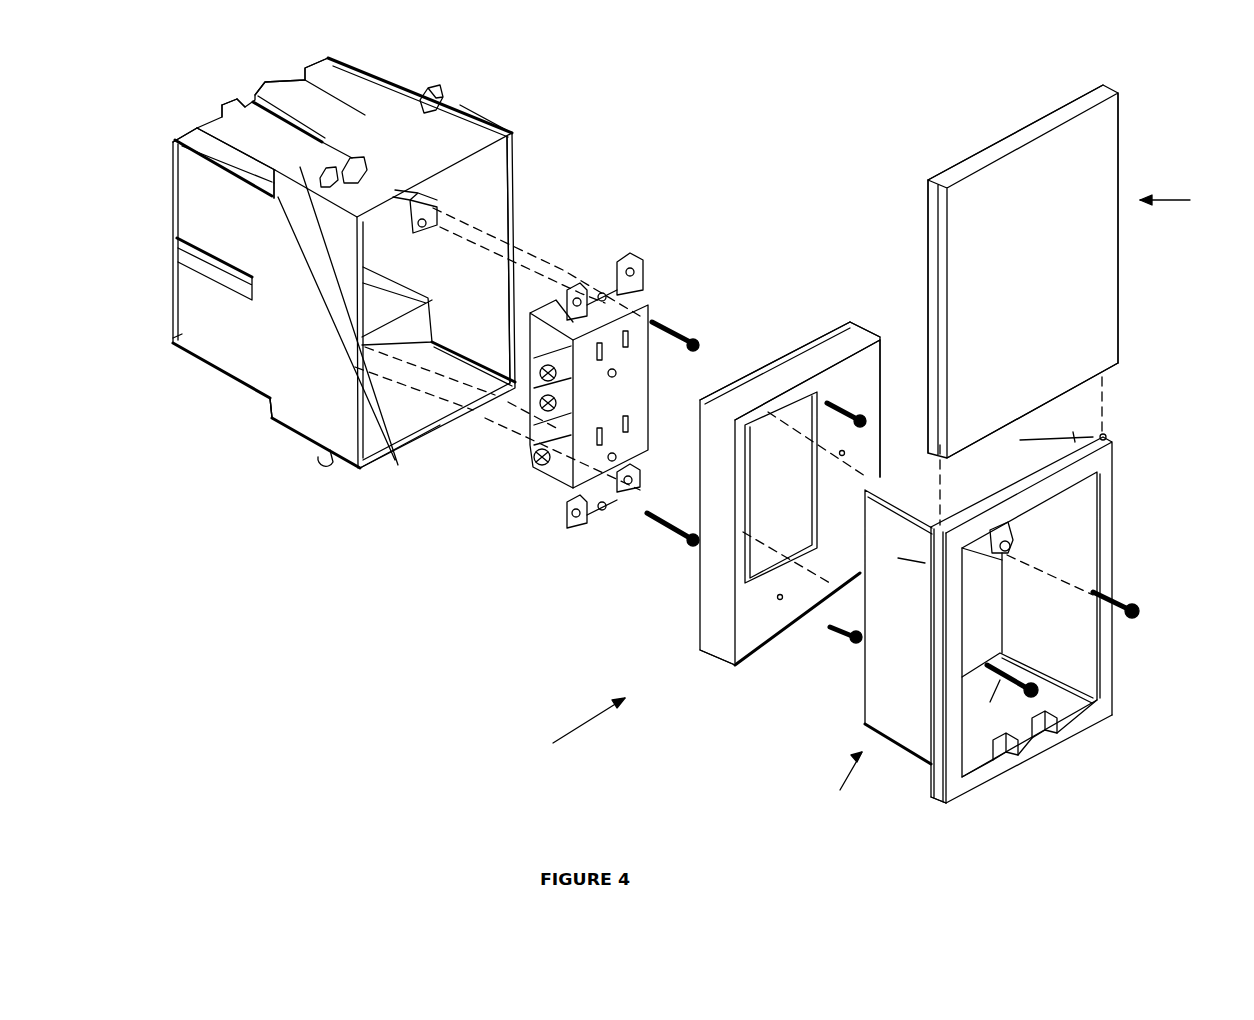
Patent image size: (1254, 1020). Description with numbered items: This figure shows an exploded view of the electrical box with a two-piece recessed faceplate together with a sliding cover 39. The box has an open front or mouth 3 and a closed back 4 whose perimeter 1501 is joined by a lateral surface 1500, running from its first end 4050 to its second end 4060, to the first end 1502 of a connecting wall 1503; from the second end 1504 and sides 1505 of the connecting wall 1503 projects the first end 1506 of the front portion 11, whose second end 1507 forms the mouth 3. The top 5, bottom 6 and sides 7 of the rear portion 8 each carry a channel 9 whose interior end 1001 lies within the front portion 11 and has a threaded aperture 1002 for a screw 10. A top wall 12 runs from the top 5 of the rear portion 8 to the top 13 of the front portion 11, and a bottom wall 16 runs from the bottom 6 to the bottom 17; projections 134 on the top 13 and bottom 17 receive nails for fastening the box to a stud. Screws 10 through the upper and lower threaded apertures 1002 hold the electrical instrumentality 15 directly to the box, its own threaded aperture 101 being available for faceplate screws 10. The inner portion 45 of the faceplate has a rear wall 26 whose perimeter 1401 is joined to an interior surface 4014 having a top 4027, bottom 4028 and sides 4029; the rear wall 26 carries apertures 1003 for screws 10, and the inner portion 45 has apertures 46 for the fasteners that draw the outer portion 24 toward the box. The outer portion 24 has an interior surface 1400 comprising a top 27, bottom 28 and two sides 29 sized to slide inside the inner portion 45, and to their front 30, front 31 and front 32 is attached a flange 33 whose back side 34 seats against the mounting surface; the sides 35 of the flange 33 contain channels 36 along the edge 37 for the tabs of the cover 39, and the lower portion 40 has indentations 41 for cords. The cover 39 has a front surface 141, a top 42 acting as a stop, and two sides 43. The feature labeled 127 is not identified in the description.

The mouth 3 is at (505, 178).
The rear wall 4 is at (247, 117).
The top 5 is at (218, 117).
The bottom 6 is at (222, 373).
The sides 7 is at (180, 278).
The rear portion 8 is at (202, 345).
The channel 9 is at (257, 102).
The screw 10 is at (678, 322).
The front portion 11 is at (315, 428).
The top wall 12 is at (272, 177).
The top of front portion 13 is at (477, 128).
The electrical instrumentality 15 is at (562, 485).
The bottom wall 16 is at (270, 398).
The bottom of front portion 17 is at (307, 443).
The outer portion 24 is at (838, 792).
The rear wall 26 is at (757, 590).
The top 27 is at (908, 482).
The bottom 28 is at (1023, 727).
The sides 29 is at (1067, 547).
The front of top 30 is at (1043, 483).
The front of bottom 31 is at (970, 758).
The front of sides 32 is at (1073, 665).
The flange 33 is at (1060, 467).
The back side of flange 34 is at (907, 797).
The sides of flange 35 is at (1113, 458).
The channels 36 is at (1107, 435).
The edge of flange 37 is at (1112, 577).
The cover 39 is at (1071, 271).
The lower portion of flange 40 is at (1073, 725).
The indentations 41 is at (1047, 737).
The top of cover 42 is at (1023, 132).
The sides of cover 43 is at (930, 243).
The inner portion 45 is at (573, 735).
The apertures 46 is at (850, 453).
The threaded aperture 101 is at (600, 273).
The window opening 127 is at (757, 557).
The projections 134 is at (433, 90).
The front surface 141 is at (1093, 262).
The interior ends 1001 is at (437, 220).
The threaded aperture 1002 is at (424, 230).
The apertures 1003 is at (782, 600).
The interior surface 1400 is at (1017, 432).
The perimeter 1401 is at (850, 373).
The lateral surface 1500 is at (174, 345).
The perimeter 1501 is at (276, 87).
The first end of connecting wall 1502 is at (270, 195).
The connecting wall 1503 is at (270, 183).
The second end of connecting wall 1504 is at (190, 127).
The sides of connecting wall 1505 is at (270, 190).
The first end of front portion 1506 is at (287, 415).
The second end of front portion 1507 is at (363, 473).
The interior surface 4014 is at (800, 357).
The top 4027 is at (770, 370).
The bottom 4028 is at (747, 643).
The sides 4029 is at (863, 350).
The first end of lateral surface 4050 is at (320, 57).
The second end of lateral surface 4060 is at (280, 200).